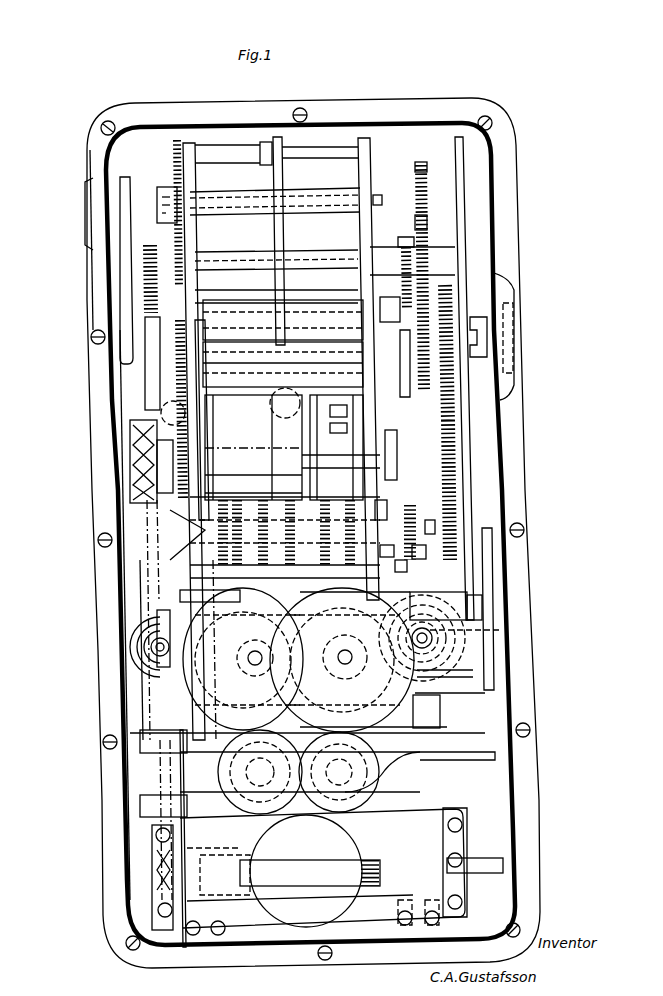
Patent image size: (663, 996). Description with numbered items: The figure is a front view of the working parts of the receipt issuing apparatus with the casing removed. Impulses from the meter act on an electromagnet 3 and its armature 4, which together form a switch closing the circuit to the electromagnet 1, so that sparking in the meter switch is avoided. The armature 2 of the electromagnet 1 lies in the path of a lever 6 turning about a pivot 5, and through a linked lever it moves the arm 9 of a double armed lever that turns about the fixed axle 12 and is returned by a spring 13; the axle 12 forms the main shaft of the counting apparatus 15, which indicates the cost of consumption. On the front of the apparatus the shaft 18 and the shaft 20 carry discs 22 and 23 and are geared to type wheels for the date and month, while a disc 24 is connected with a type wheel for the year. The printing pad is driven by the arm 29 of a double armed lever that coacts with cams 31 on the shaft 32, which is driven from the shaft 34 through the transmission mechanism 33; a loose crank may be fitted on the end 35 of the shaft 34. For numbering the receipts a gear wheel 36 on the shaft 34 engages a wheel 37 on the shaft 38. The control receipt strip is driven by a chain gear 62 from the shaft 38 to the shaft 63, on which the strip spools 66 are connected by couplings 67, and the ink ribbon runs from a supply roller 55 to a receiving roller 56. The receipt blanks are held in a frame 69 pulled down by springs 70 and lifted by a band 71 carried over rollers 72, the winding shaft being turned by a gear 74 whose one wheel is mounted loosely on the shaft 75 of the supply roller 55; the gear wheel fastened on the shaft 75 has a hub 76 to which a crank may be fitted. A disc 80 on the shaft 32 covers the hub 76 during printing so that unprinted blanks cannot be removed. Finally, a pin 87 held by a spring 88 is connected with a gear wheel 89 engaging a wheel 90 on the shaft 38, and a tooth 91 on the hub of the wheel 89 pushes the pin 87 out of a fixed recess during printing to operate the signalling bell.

The electromagnet 1 is at (215, 790).
The armature 2 is at (392, 765).
The electromagnet 3 is at (290, 945).
The armature 4 is at (345, 850).
The pivot 5 is at (500, 655).
The lever 6 is at (472, 713).
The arm 9 is at (387, 506).
The fixed axle 12 is at (395, 550).
The spring 13 is at (425, 531).
The counting apparatus 15 is at (405, 567).
The shaft 18 is at (243, 659).
The shaft 20 is at (342, 660).
The disc 22 is at (77, 700).
The disc 23 is at (458, 715).
The disc 24 is at (494, 585).
The arm 29 is at (160, 385).
The cams 31 is at (135, 295).
The shaft 32 is at (223, 255).
The transmission mechanism 33 is at (428, 222).
The shaft 34 is at (388, 305).
The shaft end 35 is at (487, 337).
The gear wheel 36 is at (452, 293).
The wheel 37 is at (455, 490).
The shaft 38 is at (244, 455).
The supply roller 55 is at (370, 165).
The receiving roller 56 is at (305, 328).
The chain gear 62 is at (132, 488).
The shaft 63 is at (500, 850).
The spools 66 is at (312, 917).
The couplings 67 is at (222, 858).
The frame 69 is at (212, 412).
The springs 70 is at (128, 645).
The band 71 is at (286, 238).
The rollers 72 is at (286, 160).
The gear 74 is at (175, 155).
The shaft 75 is at (380, 195).
The hub 76 is at (158, 192).
The disc 80 is at (143, 258).
The pin 87 is at (175, 560).
The spring 88 is at (178, 598).
The gear wheel 89 is at (430, 552).
The wheel 90 is at (400, 435).
The tooth 91 is at (436, 526).